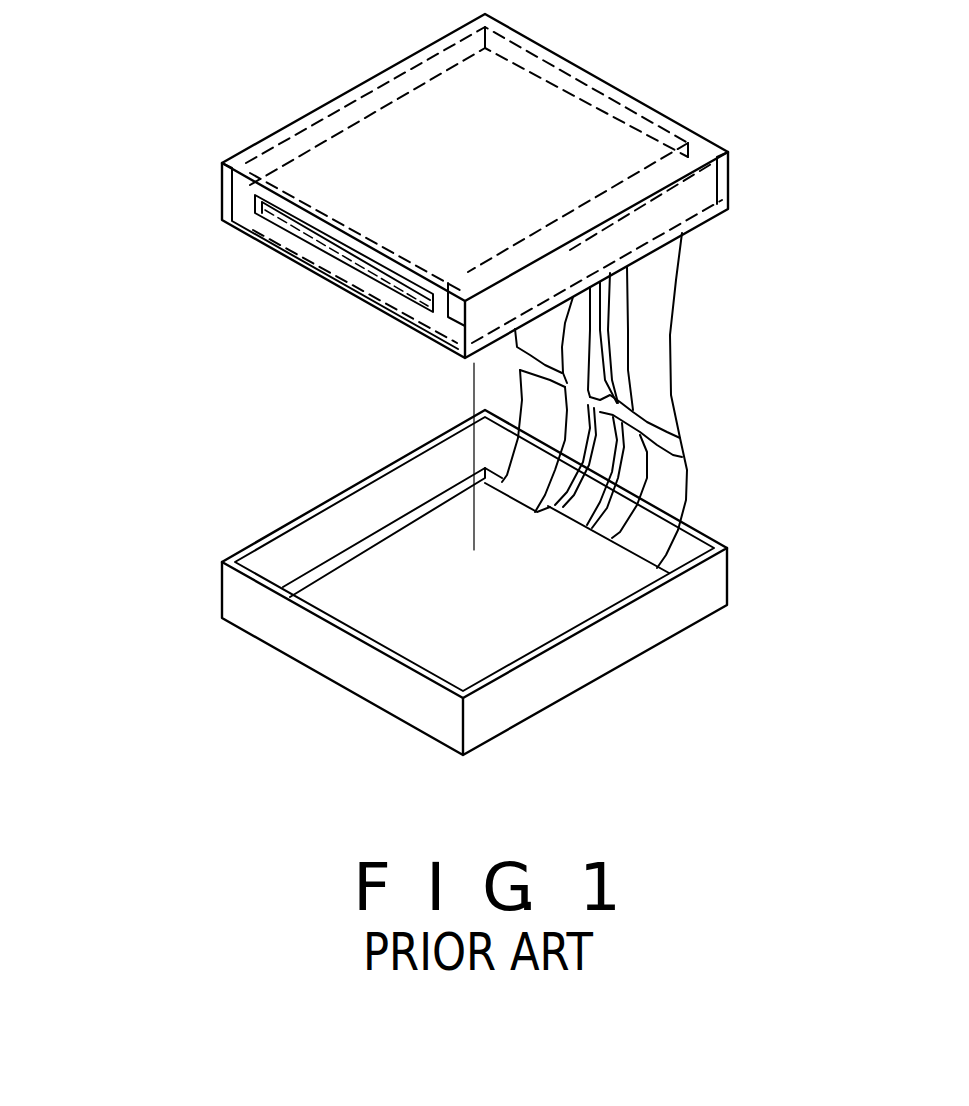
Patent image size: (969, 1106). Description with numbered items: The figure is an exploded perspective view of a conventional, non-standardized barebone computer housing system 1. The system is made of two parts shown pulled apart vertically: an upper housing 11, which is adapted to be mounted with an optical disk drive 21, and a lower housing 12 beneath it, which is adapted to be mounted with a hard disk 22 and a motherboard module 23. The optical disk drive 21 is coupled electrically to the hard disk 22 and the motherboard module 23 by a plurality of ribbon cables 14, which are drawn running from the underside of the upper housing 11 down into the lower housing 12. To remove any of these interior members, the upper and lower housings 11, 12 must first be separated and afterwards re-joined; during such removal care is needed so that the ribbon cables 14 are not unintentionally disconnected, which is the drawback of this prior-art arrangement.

The computer housing system 1 is at (187, 275).
The upper housing 11 is at (730, 197).
The lower housing 12 is at (722, 593).
The ribbon cables 14 is at (710, 408).
The optical disk drive 21 is at (366, 143).
The hard disk 22 is at (530, 633).
The motherboard module 23 is at (398, 557).